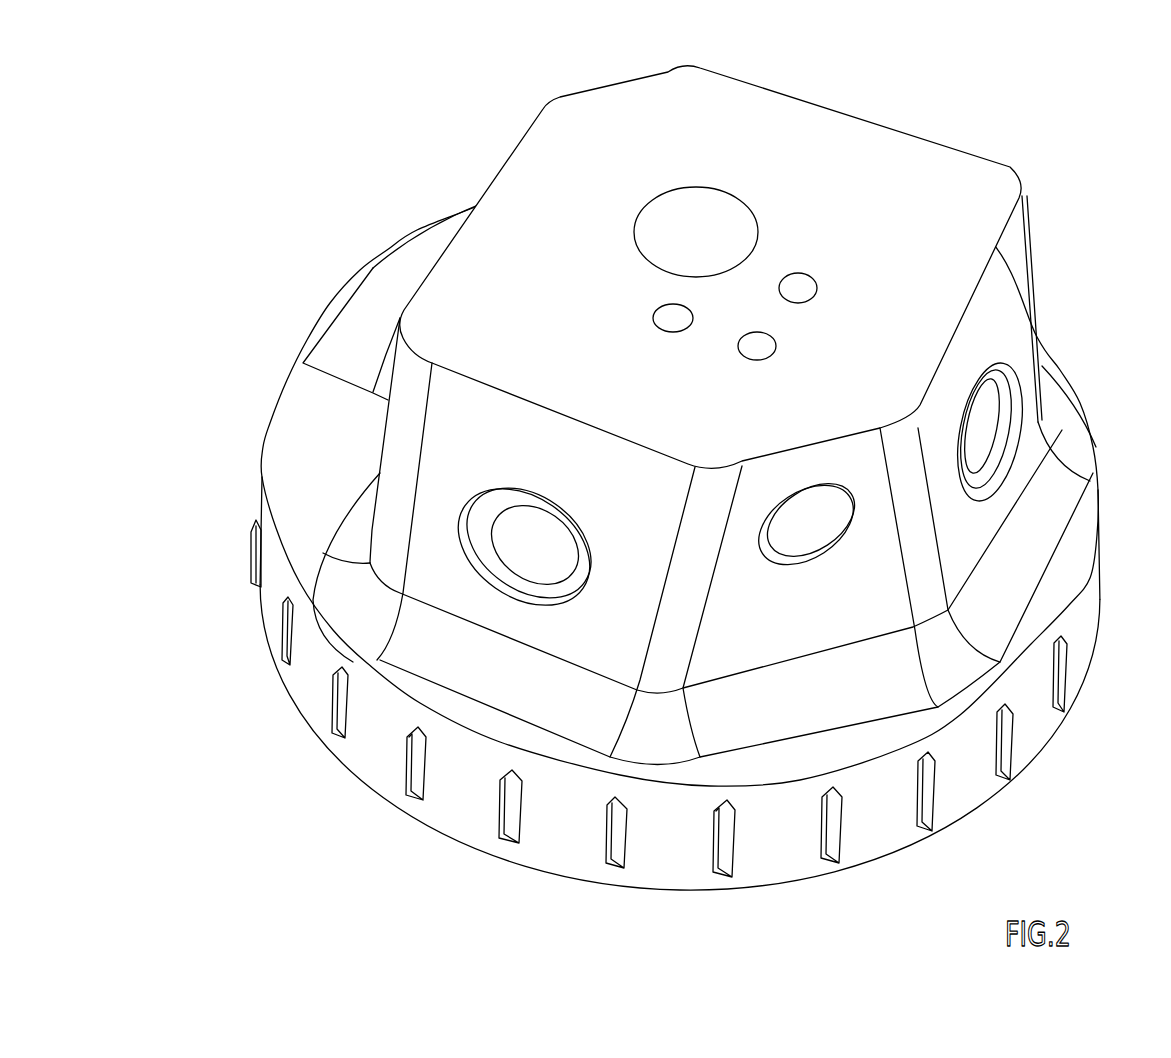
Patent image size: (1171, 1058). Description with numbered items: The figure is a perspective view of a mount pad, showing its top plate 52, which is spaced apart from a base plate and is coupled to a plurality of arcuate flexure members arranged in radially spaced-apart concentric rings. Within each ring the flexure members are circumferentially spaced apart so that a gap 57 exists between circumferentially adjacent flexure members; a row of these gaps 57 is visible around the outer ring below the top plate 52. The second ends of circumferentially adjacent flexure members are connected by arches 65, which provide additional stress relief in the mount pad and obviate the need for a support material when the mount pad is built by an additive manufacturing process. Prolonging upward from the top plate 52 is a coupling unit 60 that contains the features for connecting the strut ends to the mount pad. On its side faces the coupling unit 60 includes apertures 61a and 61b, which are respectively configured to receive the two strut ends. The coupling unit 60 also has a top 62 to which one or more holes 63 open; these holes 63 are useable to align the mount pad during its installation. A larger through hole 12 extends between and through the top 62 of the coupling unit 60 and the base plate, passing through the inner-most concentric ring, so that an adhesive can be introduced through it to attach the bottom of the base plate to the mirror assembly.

The coupling unit 60 is at (731, 410).
The top 62 is at (765, 112).
The through hole 12 is at (727, 208).
The holes 63 is at (809, 280).
The aperture 61a is at (983, 432).
The aperture 61b is at (552, 545).
The top plate 52 is at (1068, 560).
The gap 57 is at (250, 578).
The arches 65 is at (422, 728).